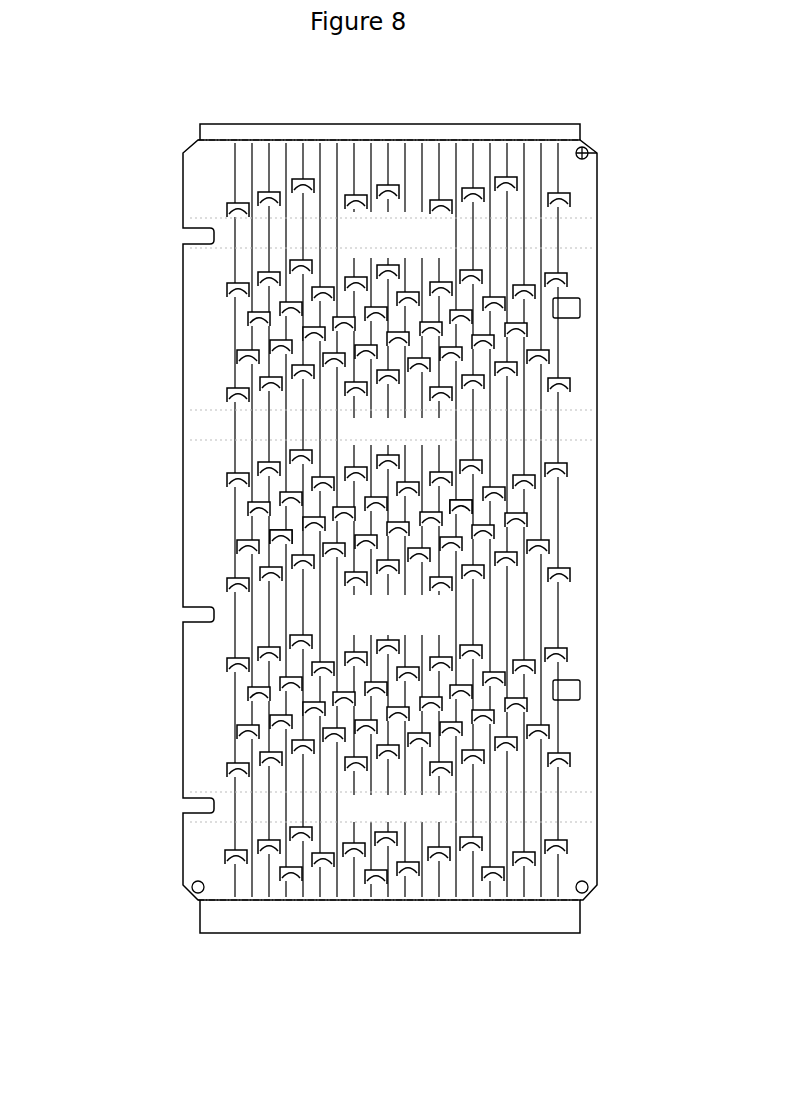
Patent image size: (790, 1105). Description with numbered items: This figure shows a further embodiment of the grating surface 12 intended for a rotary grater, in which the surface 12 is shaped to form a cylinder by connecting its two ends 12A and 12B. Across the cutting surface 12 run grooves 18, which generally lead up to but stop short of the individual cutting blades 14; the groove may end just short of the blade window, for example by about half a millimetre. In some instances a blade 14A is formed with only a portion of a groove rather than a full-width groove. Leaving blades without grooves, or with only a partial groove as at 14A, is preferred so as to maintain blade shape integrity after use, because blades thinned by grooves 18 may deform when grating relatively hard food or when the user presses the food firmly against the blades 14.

The grating surface 12 is at (219, 724).
The end of grating surface 12A is at (383, 125).
The end of grating surface 12B is at (466, 933).
The cutting blades 14 is at (557, 285).
The blade formed with only a portion of a groove 14A is at (268, 542).
The grooves 18 is at (560, 510).